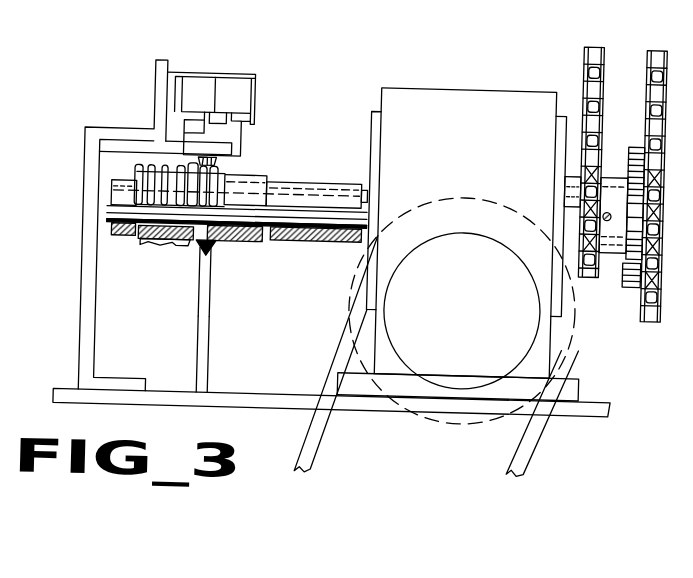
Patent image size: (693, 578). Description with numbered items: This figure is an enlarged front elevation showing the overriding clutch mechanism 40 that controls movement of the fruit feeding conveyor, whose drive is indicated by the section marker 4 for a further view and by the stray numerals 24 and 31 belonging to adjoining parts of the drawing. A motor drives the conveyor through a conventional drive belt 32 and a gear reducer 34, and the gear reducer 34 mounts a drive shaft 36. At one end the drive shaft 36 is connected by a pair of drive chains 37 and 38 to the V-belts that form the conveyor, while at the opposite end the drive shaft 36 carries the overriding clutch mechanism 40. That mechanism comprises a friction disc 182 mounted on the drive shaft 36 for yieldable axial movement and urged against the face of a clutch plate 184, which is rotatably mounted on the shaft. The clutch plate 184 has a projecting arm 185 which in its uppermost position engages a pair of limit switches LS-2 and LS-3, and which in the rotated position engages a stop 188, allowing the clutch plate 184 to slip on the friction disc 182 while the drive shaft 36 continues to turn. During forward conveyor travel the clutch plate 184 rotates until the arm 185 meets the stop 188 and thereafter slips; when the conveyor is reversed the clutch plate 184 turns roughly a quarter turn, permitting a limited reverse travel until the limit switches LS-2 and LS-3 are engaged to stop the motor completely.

The limit switch LS-2 is at (234, 100).
The limit switch LS-3 is at (243, 103).
The projecting arm 185 is at (238, 145).
The section line 4- 4 is at (260, 81).
The friction disc 182 is at (198, 258).
The clutch plate 184 is at (214, 258).
The stop 188 is at (198, 341).
The drive shaft 36 is at (300, 219).
The overriding clutch mechanism 40 is at (244, 270).
The gear reducer 34 is at (482, 150).
The drive belt 32 is at (514, 454).
The drive chain 37 is at (594, 53).
The drive chain 38 is at (659, 56).
The partial numeral from adjacent figure 24 is at (15, 1).
The partial numeral from adjacent figure 31 is at (371, 10).